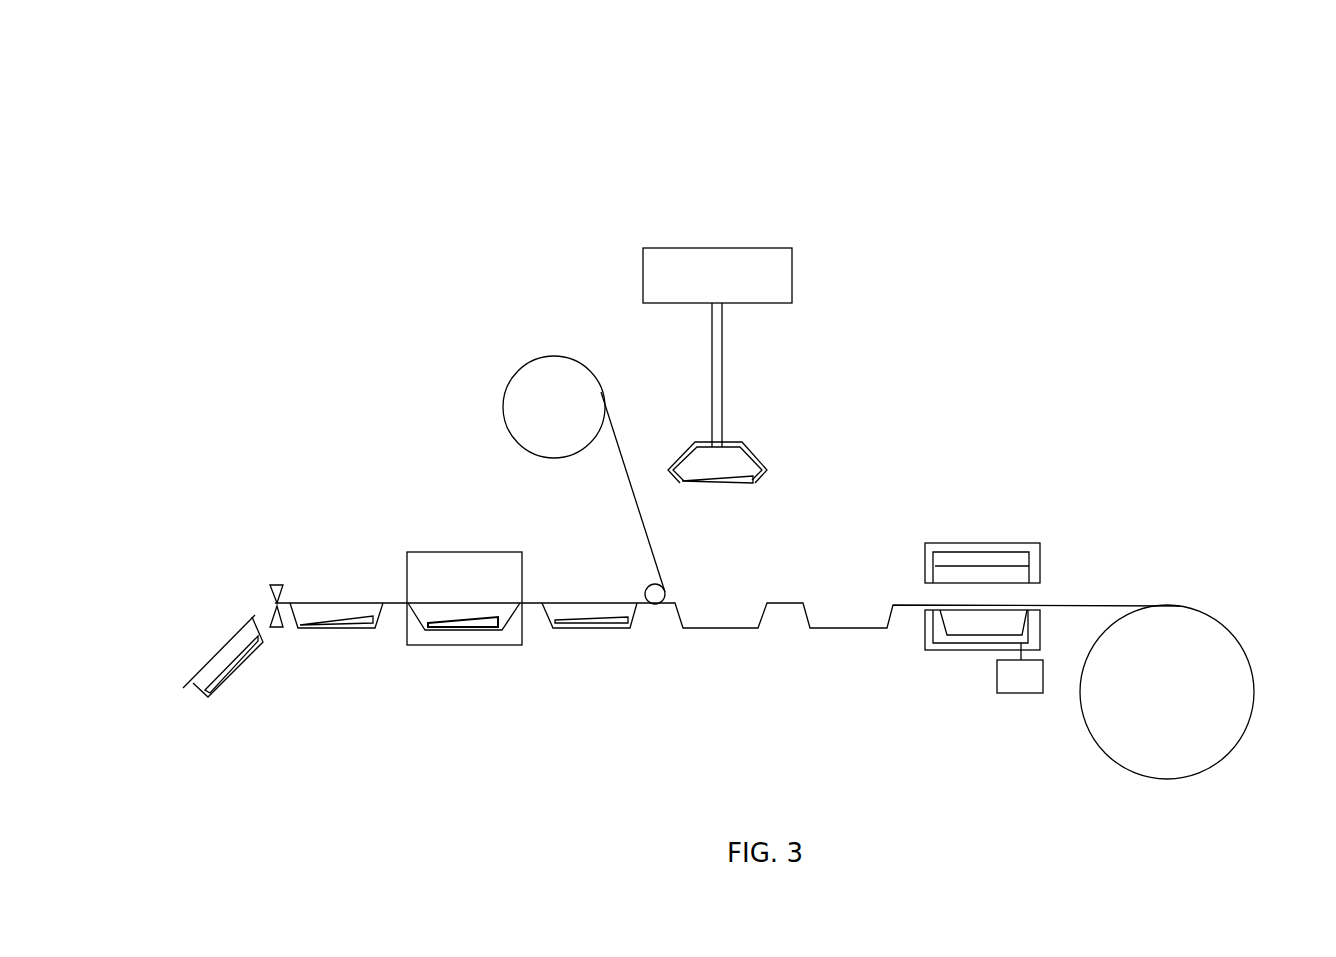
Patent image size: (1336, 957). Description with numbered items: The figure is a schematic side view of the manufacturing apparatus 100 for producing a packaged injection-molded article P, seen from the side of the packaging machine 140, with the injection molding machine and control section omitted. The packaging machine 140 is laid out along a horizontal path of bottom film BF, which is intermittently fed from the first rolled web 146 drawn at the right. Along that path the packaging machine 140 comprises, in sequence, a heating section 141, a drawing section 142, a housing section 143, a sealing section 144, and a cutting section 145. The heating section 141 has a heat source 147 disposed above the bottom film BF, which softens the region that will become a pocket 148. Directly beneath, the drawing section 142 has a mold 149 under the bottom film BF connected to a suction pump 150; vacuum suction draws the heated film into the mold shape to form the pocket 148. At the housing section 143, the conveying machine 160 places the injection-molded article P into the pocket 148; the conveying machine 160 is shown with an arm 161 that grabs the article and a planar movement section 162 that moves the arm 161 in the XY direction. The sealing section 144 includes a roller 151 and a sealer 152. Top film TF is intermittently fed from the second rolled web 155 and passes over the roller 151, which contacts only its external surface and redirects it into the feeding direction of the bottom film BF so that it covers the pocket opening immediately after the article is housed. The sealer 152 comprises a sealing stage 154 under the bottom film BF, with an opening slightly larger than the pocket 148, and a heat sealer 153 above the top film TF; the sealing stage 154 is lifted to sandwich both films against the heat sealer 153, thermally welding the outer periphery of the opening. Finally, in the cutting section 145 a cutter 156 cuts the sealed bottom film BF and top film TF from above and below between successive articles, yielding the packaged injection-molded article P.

The manufacturing apparatus 100 is at (879, 102).
The packaging machine 140 is at (976, 536).
The heating section 141 is at (982, 493).
The drawing section 142 is at (976, 690).
The housing section 143 is at (723, 665).
The sealing section 144 is at (469, 758).
The cutting section 145 is at (297, 722).
The first rolled web 146 is at (1215, 642).
The heat source 147 is at (997, 578).
The pocket 148 is at (850, 628).
The mold 149 is at (947, 636).
The suction pump 150 is at (1003, 691).
The roller 151 is at (646, 589).
The sealer 152 is at (464, 646).
The heat sealer 153 is at (438, 590).
The sealing stage 154 is at (482, 637).
The second rolled web 155 is at (518, 403).
The cutter 156 is at (281, 604).
The conveying machine 160 is at (684, 316).
The arm 161 is at (717, 333).
The planar movement section 162 is at (653, 267).
The injection-molded article P is at (618, 622).
The top film TF is at (630, 482).
The bottom film BF is at (1107, 606).